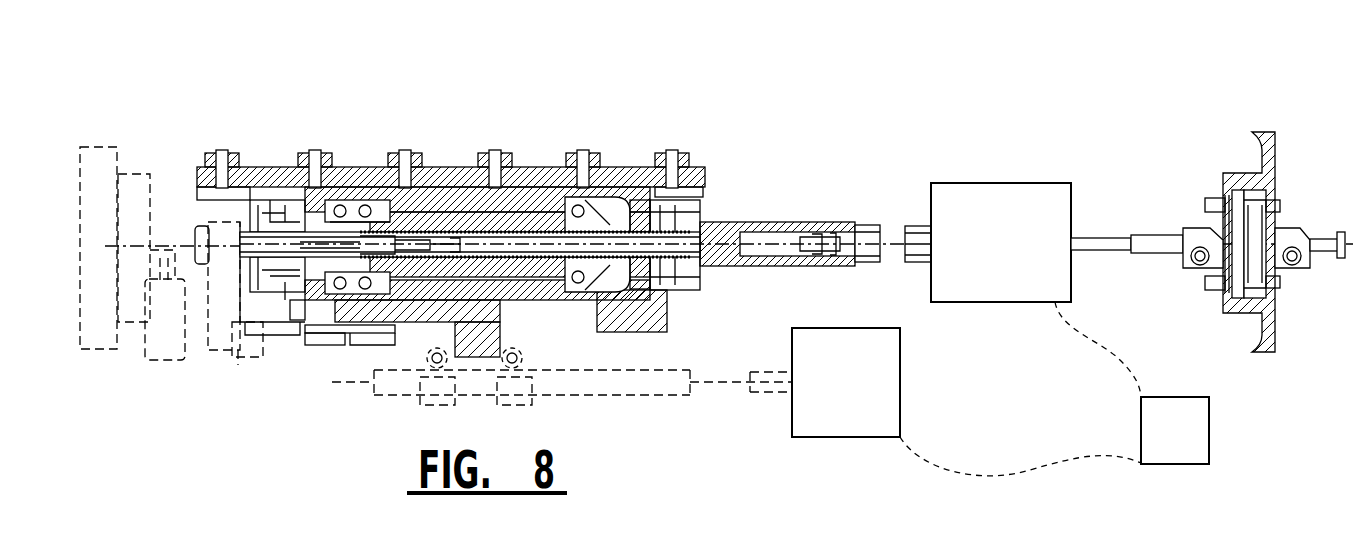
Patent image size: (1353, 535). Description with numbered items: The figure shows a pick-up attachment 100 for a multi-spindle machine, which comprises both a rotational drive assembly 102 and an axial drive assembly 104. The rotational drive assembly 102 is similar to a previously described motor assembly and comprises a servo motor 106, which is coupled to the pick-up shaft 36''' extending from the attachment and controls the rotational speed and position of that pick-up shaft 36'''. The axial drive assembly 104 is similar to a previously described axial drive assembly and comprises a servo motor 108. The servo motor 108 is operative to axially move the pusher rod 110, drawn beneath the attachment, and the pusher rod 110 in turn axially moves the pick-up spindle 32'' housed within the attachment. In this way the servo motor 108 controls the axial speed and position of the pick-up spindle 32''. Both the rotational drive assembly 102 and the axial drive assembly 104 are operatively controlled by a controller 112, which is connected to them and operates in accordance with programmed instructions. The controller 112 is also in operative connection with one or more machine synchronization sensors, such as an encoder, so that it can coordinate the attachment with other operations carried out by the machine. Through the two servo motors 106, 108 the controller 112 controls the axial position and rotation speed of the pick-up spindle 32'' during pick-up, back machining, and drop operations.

The pick-up attachment 100 is at (566, 196).
The pick-up spindle 32'' is at (470, 165).
The pick-up shaft 36''' is at (790, 204).
The rotational drive assembly 102 is at (1060, 166).
The axial drive assembly 104 is at (912, 418).
The servo motor 106 is at (963, 183).
The servo motor 108 is at (900, 352).
The pusher rod 110 is at (623, 395).
The controller 112 is at (1209, 423).